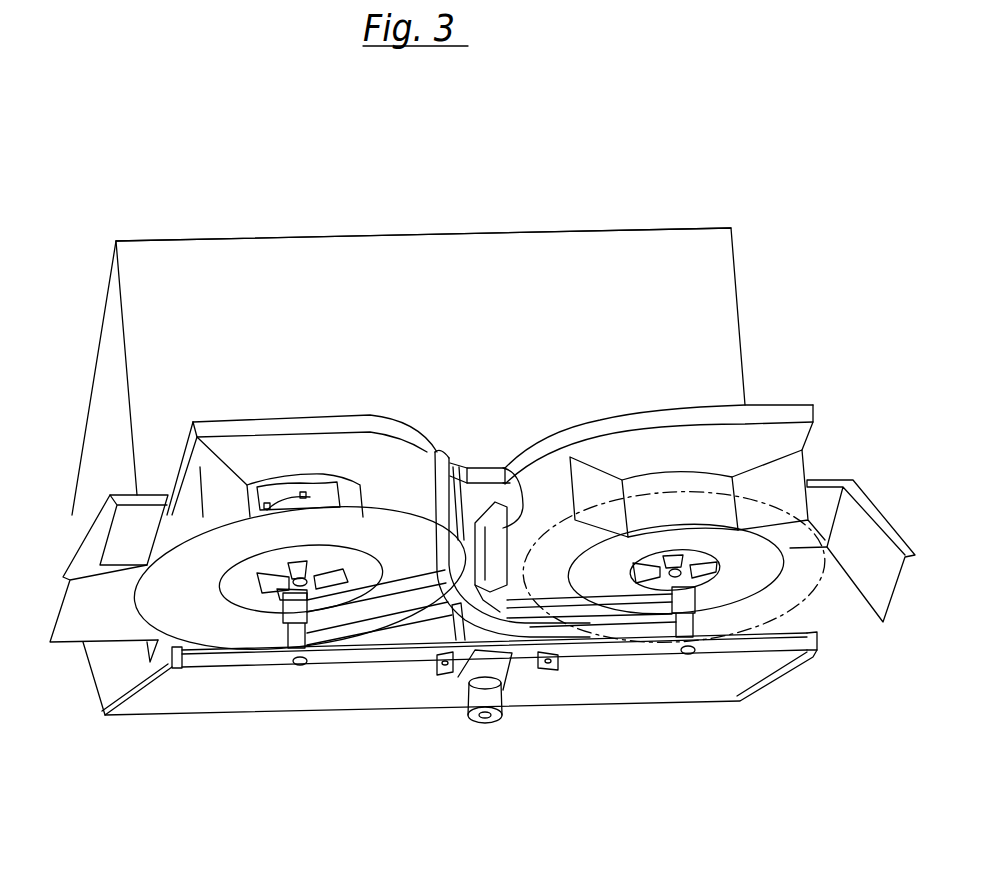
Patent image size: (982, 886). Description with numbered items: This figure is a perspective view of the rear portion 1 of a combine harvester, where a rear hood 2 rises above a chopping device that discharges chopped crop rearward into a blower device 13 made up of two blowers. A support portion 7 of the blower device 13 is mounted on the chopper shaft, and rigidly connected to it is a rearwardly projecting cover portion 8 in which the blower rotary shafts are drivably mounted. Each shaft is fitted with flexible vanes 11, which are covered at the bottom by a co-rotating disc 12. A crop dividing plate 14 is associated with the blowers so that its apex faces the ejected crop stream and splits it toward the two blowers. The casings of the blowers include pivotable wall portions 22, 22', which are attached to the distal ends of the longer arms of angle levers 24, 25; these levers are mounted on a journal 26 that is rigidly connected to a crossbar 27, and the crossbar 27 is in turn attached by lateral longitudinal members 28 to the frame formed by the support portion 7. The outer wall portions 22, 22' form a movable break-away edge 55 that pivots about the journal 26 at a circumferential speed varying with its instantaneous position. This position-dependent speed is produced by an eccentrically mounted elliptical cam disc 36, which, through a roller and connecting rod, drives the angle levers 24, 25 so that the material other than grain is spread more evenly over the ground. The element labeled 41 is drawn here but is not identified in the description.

The rear portion 1 is at (249, 238).
The rear hood 2 is at (446, 284).
The support portion 7 is at (102, 683).
The cover portion 8 is at (253, 426).
The flexible vanes 11 is at (205, 480).
The co-rotating disc 12 is at (200, 633).
The blower device 13 is at (305, 417).
The crop dividing plate 14 is at (448, 621).
The wall portion 22 is at (499, 509).
The wall portion 22' is at (481, 503).
The angle lever 24 is at (388, 600).
The angle lever 25 is at (337, 605).
The journal 26 is at (300, 666).
The crossbar 27 is at (775, 648).
The lateral longitudinal members 28 is at (167, 662).
The cam disc 36 is at (517, 672).
The inner housing element 41 is at (340, 471).
The break-away edge 55 is at (399, 491).